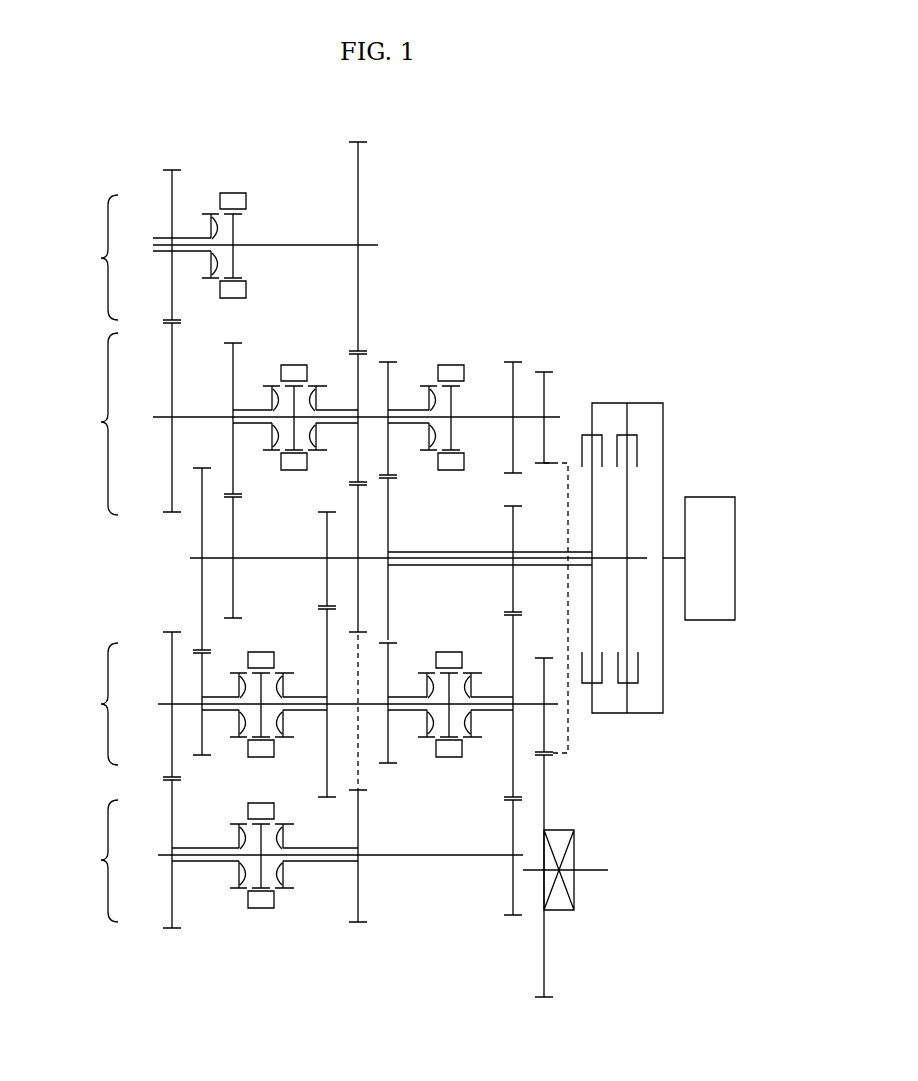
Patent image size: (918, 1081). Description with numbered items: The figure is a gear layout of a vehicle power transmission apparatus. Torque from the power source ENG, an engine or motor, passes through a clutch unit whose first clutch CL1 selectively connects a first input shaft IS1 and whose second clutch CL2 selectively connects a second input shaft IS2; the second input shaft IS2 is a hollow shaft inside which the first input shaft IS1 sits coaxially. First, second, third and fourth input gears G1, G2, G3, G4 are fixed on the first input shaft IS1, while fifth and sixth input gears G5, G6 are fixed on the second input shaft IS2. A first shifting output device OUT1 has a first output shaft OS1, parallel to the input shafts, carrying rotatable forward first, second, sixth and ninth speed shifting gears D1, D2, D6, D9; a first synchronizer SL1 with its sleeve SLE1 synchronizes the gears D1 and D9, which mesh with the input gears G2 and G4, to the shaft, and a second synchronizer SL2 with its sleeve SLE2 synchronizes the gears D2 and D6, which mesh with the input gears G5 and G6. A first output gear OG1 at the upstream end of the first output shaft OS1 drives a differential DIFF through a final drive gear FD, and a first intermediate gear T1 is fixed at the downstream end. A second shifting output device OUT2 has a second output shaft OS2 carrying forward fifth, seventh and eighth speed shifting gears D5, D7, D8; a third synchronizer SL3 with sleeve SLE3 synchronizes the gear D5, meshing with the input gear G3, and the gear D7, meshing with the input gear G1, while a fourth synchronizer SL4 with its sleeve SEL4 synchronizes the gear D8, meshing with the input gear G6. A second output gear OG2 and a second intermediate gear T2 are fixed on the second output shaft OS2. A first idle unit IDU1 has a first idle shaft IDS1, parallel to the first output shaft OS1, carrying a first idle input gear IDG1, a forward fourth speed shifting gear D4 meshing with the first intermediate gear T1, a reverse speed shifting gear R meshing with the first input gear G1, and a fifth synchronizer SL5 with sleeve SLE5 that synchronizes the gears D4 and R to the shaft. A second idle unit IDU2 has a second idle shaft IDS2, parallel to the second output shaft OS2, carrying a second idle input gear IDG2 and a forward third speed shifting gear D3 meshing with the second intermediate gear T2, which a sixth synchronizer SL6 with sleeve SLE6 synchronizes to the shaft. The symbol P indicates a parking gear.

The second idle shaft IDS2 is at (265, 216).
The second output shaft OS2 is at (346, 391).
The first input shaft IS1 is at (418, 584).
The second input shaft IS2 is at (490, 596).
The first output shaft OS1 is at (335, 692).
The first idle shaft IDS1 is at (340, 884).
The forward third speed shifting gear D3 is at (150, 245).
The second intermediate gear T2 is at (155, 417).
The first intermediate gear T1 is at (148, 704).
The forward fourth speed shifting gear D4 is at (152, 854).
The fourth input gear G4 is at (183, 559).
The forward ninth speed shifting gear D9 is at (217, 700).
The forward fifth speed shifting gear D5 is at (217, 418).
The third input gear G3 is at (253, 557).
The second input gear G2 is at (306, 559).
The forward first speed shifting gear D1 is at (312, 703).
The second idle input gear IDG2 is at (386, 246).
The forward seventh speed shifting gear D7 is at (369, 393).
The first input gear G1 is at (339, 556).
The reverse speed shifting gear R is at (342, 779).
The forward eighth speed shifting gear D8 is at (399, 392).
The sixth input gear G6 is at (413, 515).
The forward sixth speed shifting gear D6 is at (412, 694).
The parking gear P is at (518, 389).
The fifth input gear G5 is at (531, 559).
The forward second speed shifting gear D2 is at (497, 706).
The first idle input gear IDG1 is at (481, 864).
The second output gear OG2 is at (562, 391).
The first output gear OG1 is at (544, 608).
The final drive gear FD is at (565, 876).
The sleeve SLE6 is at (201, 214).
The sixth synchronizer SL6 is at (279, 158).
The sleeve SLE3 is at (295, 387).
The third synchronizer SL3 is at (335, 311).
The sleeve SEL4 is at (447, 395).
The fourth synchronizer SL4 is at (443, 301).
The sleeve SLE1 is at (264, 729).
The first synchronizer SL1 is at (214, 794).
The sleeve SLE2 is at (450, 729).
The second synchronizer SL2 is at (400, 794).
The sleeve SLE5 is at (265, 884).
The fifth synchronizer SL5 is at (202, 951).
The first clutch CL1 is at (633, 533).
The second clutch CL2 is at (610, 518).
The power source ENG is at (699, 558).
The differential DIFF is at (581, 870).
The second idle unit IDU2 is at (86, 257).
The second shifting output device OUT2 is at (85, 424).
The first shifting output device OUT1 is at (85, 704).
The first idle unit IDU1 is at (86, 861).